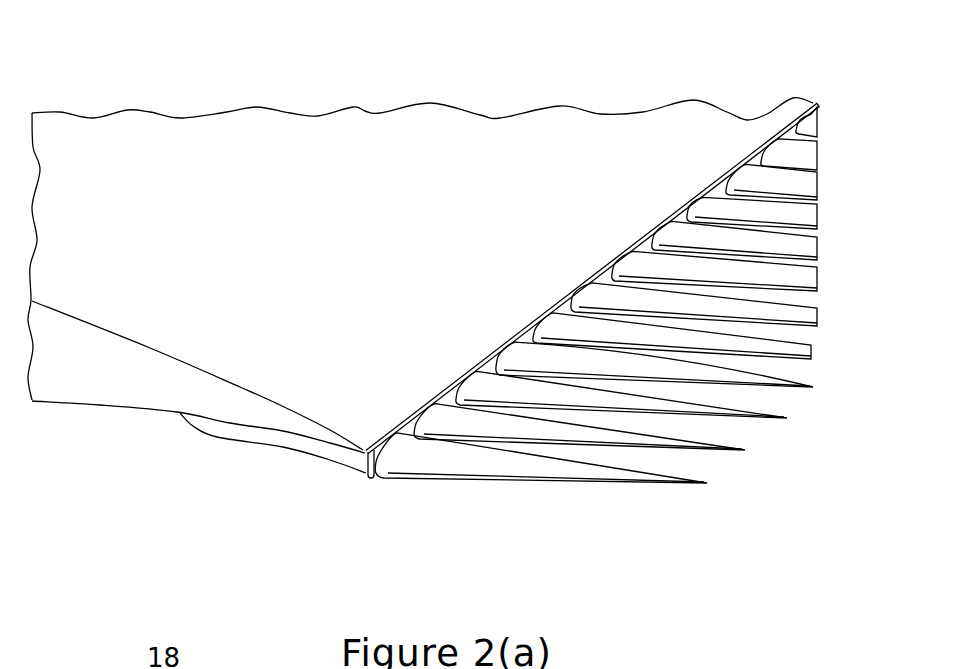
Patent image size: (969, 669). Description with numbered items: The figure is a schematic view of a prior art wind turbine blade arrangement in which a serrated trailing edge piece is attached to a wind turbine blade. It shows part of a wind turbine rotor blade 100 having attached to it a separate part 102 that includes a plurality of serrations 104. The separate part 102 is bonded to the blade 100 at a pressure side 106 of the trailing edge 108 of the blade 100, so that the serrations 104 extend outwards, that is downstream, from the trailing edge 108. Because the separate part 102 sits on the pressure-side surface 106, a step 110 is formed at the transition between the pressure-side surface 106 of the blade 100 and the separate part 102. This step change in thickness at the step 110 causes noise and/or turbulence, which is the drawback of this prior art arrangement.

The wind turbine rotor blade 100 is at (152, 125).
The separate part 102 is at (381, 507).
The serrations 104 is at (642, 485).
The pressure side 106 is at (80, 437).
The trailing edge 108 is at (760, 146).
The step 110 is at (192, 438).